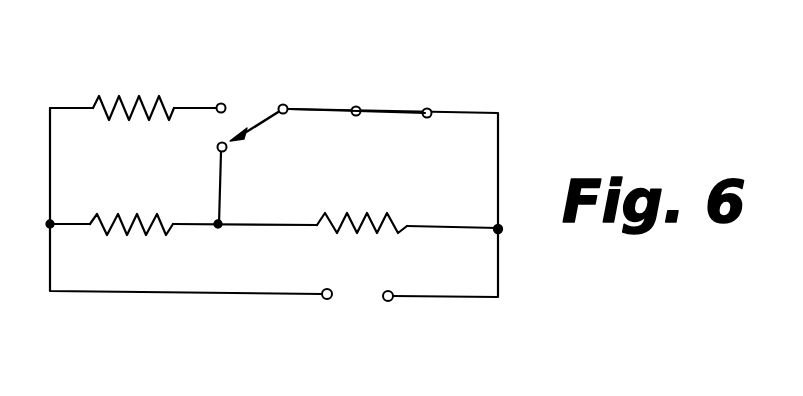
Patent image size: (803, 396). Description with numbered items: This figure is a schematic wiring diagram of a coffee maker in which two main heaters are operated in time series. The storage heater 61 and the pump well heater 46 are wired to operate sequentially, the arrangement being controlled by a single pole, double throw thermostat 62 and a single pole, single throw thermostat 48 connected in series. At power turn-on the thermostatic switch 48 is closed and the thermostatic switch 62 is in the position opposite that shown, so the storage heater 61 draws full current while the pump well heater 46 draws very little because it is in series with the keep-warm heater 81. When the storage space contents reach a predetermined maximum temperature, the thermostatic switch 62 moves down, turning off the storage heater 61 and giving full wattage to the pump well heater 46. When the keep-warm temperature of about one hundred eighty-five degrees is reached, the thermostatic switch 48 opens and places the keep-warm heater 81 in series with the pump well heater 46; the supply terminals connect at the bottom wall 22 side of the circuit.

The storage heater 61 is at (143, 102).
The heating element 46 is at (147, 183).
The keep-warm heater 81 is at (395, 192).
The single pole, double throw thermostat 62 is at (252, 117).
The single pole, single throw thermostat 48 is at (382, 111).
The bottom wall 22 is at (385, 301).